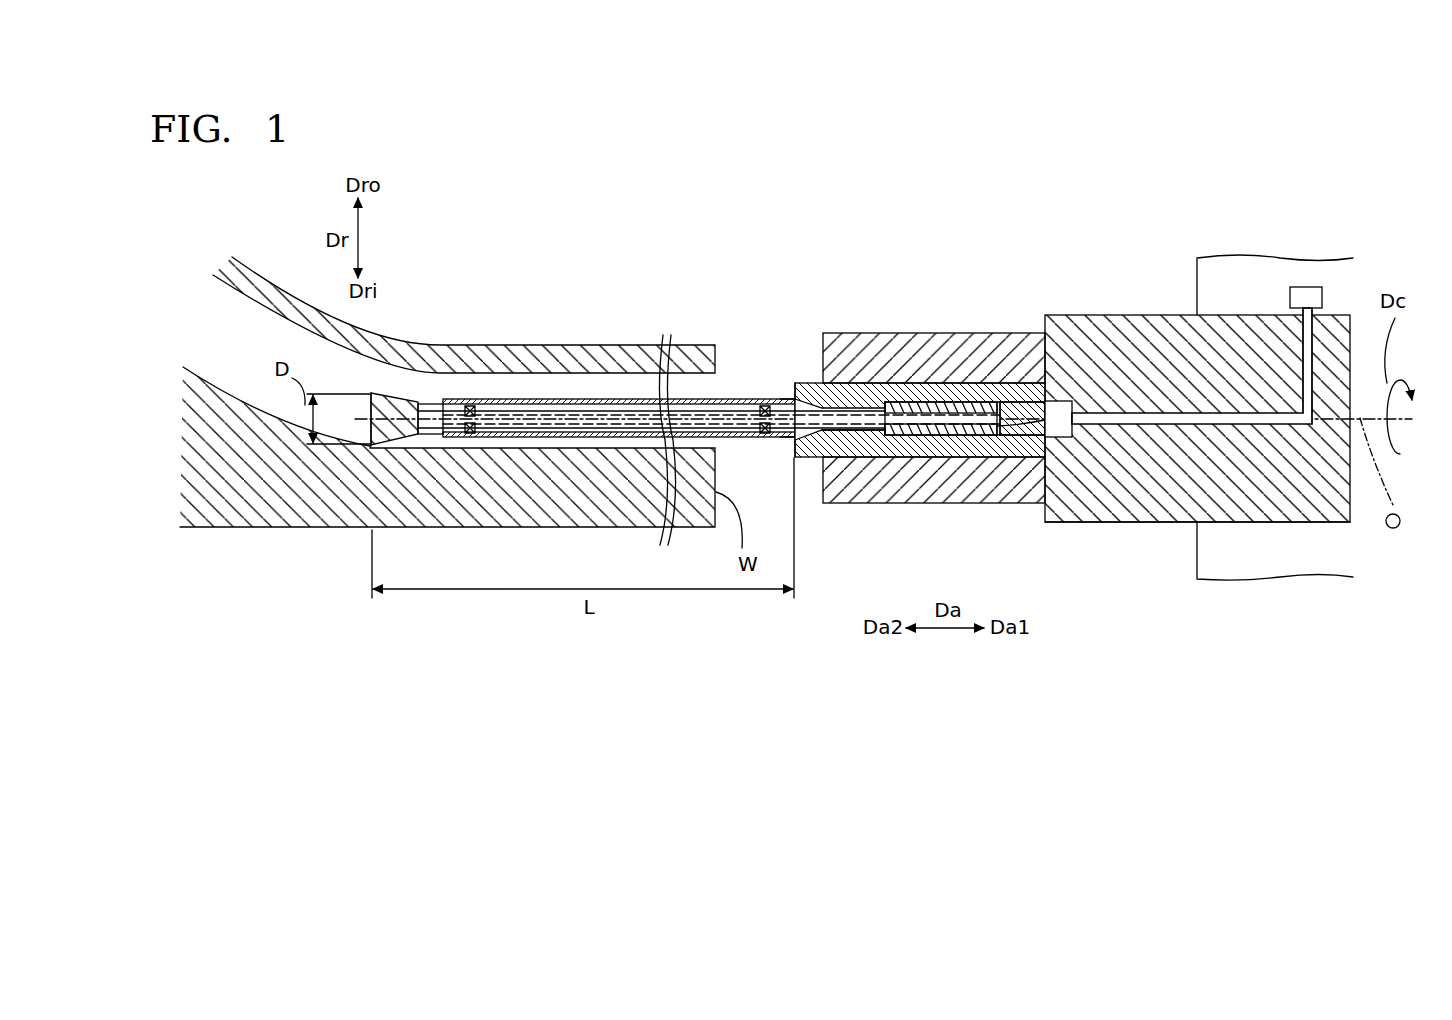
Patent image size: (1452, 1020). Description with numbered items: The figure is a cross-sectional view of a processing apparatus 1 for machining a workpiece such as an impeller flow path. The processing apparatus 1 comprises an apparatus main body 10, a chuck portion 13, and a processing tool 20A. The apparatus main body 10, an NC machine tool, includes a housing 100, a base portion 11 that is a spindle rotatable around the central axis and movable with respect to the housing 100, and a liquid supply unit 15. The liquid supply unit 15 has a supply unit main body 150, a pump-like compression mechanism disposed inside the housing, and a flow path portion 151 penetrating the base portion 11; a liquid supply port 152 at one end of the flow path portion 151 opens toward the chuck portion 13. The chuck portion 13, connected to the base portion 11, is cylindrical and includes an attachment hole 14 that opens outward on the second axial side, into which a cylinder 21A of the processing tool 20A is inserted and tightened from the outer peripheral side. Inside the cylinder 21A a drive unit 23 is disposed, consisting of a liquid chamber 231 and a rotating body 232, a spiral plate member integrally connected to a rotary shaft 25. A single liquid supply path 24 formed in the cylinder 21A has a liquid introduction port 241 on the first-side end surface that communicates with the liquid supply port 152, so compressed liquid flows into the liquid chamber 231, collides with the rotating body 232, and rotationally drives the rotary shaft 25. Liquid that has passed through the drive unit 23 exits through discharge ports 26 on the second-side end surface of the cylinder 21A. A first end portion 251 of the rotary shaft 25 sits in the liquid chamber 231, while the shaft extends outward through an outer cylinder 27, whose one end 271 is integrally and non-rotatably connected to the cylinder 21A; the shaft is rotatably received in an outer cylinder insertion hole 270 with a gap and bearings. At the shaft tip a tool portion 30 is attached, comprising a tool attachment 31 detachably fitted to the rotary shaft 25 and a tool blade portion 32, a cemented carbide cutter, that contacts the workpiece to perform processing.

The processing apparatus 1 is at (865, 248).
The apparatus main body 10 is at (1080, 284).
The housing 100 is at (1205, 277).
The base portion 11 is at (1118, 522).
The chuck portion 13 is at (928, 332).
The attachment hole 14 is at (813, 458).
The liquid supply unit 15 is at (1207, 407).
The supply unit main body 150 is at (1305, 289).
The flow path portion 151 is at (1190, 424).
The liquid supply port 152 is at (1064, 410).
The processing tool 20A is at (814, 376).
The cylinder 21A is at (898, 430).
The drive unit 23 is at (960, 398).
The liquid chamber 231 is at (890, 457).
The rotating body 232 is at (945, 457).
The liquid supply path 24 is at (1030, 458).
The liquid introduction port 241 is at (1062, 437).
The rotary shaft 25 is at (610, 437).
The first end portion 251 is at (977, 440).
The discharge port 26 is at (803, 384).
The outer cylinder 27 is at (568, 399).
The outer cylinder insertion hole 270 is at (657, 392).
The one end 271 is at (790, 397).
The tool portion 30 is at (420, 393).
The tool attachment 31 is at (438, 437).
The tool blade portion 32 is at (396, 448).